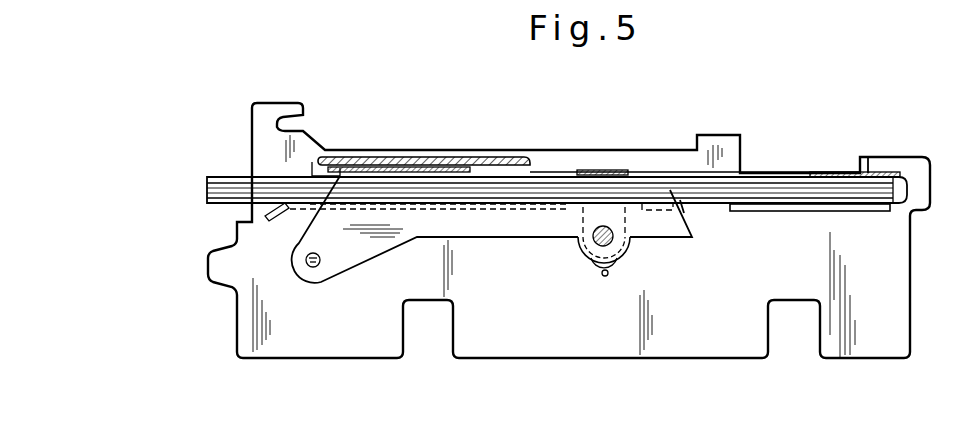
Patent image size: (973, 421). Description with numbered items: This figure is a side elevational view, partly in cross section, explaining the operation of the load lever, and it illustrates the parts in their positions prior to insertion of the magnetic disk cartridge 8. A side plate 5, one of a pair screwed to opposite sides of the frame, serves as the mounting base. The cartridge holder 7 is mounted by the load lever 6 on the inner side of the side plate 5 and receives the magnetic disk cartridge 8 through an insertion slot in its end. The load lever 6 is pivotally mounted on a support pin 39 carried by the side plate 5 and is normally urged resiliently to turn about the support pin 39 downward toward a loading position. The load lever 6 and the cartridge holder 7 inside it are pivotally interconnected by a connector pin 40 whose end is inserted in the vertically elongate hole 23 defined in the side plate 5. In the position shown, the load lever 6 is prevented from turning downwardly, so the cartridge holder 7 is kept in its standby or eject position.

The side plate 5 is at (692, 335).
The load lever 6 is at (412, 158).
The cartridge holder 7 is at (600, 170).
The magnetic disk cartridge 8 is at (217, 175).
The vertically elongate hole 23 is at (603, 280).
The support pin 39 is at (313, 268).
The connector pin 40 is at (624, 246).